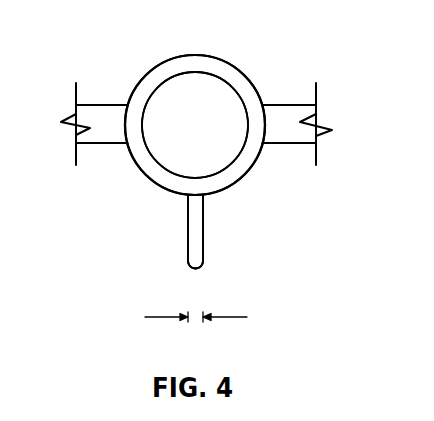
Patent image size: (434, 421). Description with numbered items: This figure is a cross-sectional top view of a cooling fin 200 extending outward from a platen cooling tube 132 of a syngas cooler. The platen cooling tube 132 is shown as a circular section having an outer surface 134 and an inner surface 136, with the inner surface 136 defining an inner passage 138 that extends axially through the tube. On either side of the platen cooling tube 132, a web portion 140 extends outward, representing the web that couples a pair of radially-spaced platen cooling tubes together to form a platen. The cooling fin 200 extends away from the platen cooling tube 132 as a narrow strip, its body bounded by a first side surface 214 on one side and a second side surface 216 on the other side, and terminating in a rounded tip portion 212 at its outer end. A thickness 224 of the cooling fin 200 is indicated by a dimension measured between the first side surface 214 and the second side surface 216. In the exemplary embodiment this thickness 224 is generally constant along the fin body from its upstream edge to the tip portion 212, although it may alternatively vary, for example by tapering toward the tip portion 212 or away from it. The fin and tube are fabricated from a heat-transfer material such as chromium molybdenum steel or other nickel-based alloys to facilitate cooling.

The platen cooling tube 132 is at (212, 43).
The outer surface 134 is at (195, 55).
The inner surface 136 is at (243, 108).
The inner passage 138 is at (182, 152).
The web portion 140 is at (110, 105).
The cooling fin 200 is at (178, 222).
The tip portion 212 is at (197, 268).
The first side surface 214 is at (188, 238).
The second side surface 216 is at (203, 213).
The thickness 224 is at (170, 318).